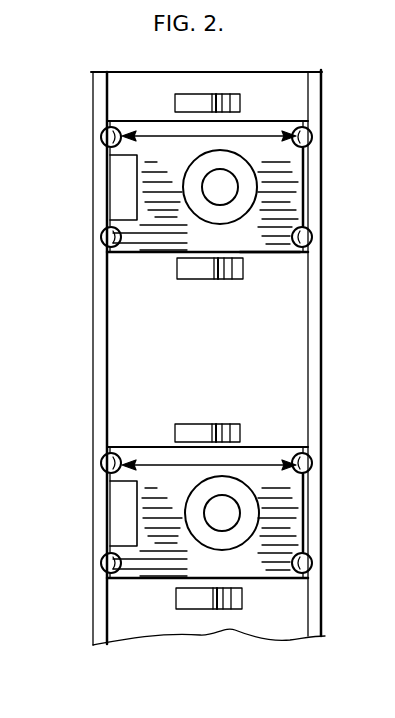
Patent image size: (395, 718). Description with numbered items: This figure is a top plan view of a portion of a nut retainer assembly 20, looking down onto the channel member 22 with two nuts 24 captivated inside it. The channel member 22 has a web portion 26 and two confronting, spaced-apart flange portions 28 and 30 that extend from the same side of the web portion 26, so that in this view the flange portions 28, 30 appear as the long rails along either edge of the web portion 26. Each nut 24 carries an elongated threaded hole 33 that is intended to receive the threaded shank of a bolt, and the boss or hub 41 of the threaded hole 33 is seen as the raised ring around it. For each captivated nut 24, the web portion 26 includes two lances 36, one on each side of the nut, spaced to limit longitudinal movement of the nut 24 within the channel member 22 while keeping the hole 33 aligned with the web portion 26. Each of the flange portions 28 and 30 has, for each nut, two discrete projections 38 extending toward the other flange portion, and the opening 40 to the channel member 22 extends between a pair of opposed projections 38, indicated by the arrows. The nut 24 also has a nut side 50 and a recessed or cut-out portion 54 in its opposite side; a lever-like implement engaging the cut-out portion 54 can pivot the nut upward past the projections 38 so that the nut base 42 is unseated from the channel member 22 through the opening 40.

The nut retainer assembly 20 is at (83, 466).
The channel member 22 is at (93, 420).
The nut 24 is at (163, 257).
The web portion 26 is at (293, 377).
The flange portion 28 is at (318, 327).
The flange portion 30 is at (96, 375).
The threaded hole 33 is at (223, 198).
The lance 36 is at (231, 96).
The projection 38 is at (110, 141).
The opening 40 is at (162, 133).
The boss 41 is at (202, 211).
The nut base 42 is at (268, 245).
The nut side 50 is at (302, 192).
The cut-out portion 54 is at (131, 203).